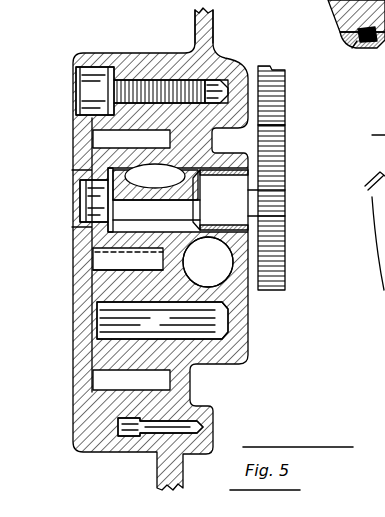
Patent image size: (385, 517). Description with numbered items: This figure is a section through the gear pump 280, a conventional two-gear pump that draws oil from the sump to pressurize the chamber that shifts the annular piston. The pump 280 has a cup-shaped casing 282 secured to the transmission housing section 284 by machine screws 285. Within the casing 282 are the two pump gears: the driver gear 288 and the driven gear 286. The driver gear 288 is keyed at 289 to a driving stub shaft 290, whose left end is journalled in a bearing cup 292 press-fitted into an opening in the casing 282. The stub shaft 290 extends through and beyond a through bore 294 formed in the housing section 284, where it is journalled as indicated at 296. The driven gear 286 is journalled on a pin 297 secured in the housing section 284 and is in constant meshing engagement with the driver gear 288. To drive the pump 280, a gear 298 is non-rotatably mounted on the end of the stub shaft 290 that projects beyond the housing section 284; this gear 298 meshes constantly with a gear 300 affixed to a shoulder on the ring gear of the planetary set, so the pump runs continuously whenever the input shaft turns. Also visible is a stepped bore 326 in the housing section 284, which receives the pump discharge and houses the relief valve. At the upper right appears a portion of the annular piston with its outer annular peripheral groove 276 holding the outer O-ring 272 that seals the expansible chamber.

The gear pump 280 is at (136, 44).
The cup-shaped casing 282 is at (76, 130).
The transmission housing section 284 is at (214, 22).
The machine screws 285 is at (76, 86).
The driver gear 288 is at (132, 136).
The key 289 is at (170, 168).
The driving stub shaft 290 is at (216, 214).
The bearing cup 292 is at (66, 222).
The through bore 294 is at (199, 180).
The journal 296 is at (232, 214).
The gear 298 is at (284, 202).
The gear 300 is at (286, 99).
The stepped bore 326 is at (233, 273).
The driven gear 286 is at (96, 283).
The pin 297 is at (97, 323).
The annular peripheral groove 276 is at (372, 33).
The outer annular O-ring 272 is at (341, 54).